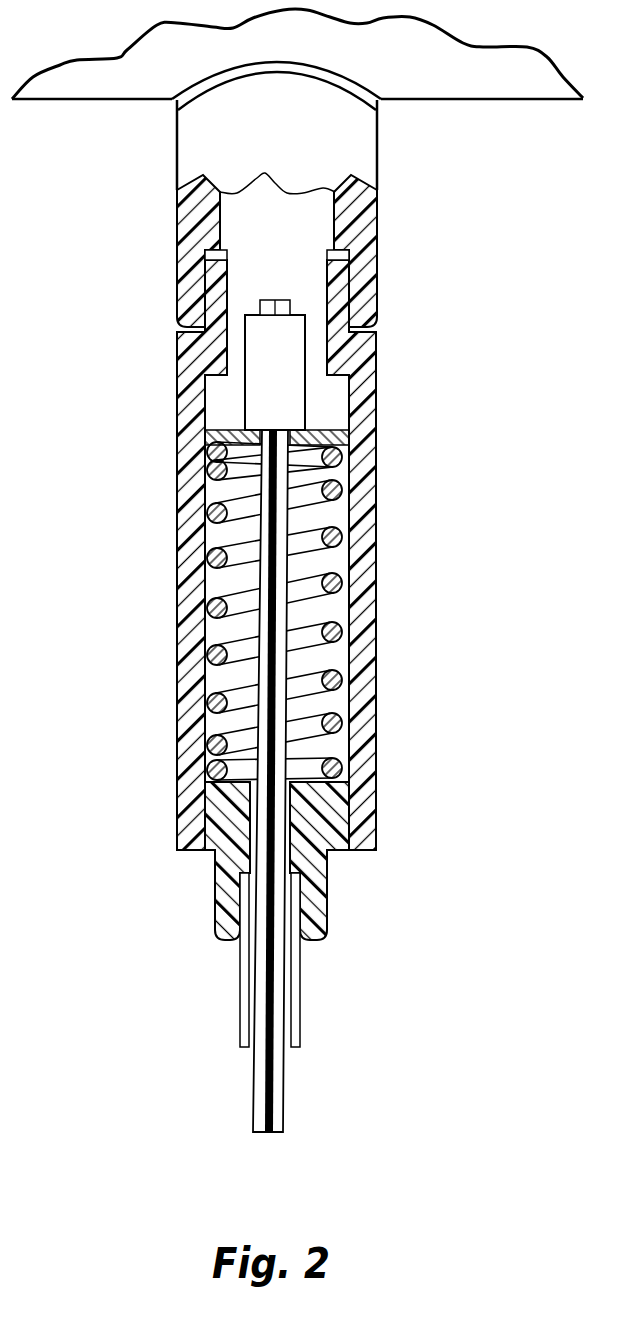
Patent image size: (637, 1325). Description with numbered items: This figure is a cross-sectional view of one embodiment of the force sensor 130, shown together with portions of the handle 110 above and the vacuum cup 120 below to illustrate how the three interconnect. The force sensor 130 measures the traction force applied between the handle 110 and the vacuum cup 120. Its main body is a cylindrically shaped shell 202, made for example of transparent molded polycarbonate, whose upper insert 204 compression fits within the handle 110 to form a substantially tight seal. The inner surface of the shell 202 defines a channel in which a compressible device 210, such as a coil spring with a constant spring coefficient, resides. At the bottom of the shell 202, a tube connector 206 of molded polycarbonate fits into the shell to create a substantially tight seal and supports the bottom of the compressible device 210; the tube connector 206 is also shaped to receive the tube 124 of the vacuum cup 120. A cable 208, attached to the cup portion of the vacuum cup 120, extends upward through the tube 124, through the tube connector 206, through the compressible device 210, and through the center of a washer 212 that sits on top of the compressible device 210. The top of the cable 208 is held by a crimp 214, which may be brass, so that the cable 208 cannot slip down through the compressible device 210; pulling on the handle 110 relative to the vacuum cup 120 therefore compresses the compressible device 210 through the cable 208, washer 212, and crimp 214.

The handle 110 is at (463, 100).
The force sensor 130 is at (455, 555).
The vacuum cup 120 is at (388, 1048).
The shell 202 is at (175, 508).
The upper insert 204 is at (217, 292).
The tube connector 206 is at (215, 877).
The cable 208 is at (283, 1095).
The compressible device 210 is at (303, 640).
The washer 212 is at (222, 441).
The crimp 214 is at (300, 388).
The tube 124 is at (238, 1007).